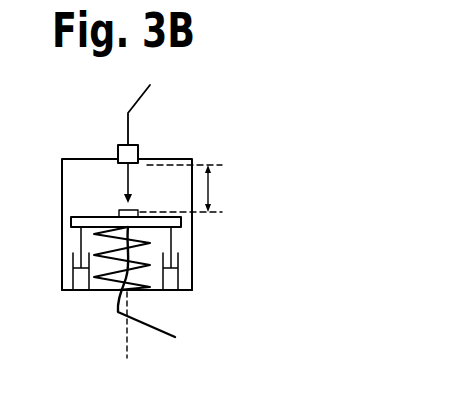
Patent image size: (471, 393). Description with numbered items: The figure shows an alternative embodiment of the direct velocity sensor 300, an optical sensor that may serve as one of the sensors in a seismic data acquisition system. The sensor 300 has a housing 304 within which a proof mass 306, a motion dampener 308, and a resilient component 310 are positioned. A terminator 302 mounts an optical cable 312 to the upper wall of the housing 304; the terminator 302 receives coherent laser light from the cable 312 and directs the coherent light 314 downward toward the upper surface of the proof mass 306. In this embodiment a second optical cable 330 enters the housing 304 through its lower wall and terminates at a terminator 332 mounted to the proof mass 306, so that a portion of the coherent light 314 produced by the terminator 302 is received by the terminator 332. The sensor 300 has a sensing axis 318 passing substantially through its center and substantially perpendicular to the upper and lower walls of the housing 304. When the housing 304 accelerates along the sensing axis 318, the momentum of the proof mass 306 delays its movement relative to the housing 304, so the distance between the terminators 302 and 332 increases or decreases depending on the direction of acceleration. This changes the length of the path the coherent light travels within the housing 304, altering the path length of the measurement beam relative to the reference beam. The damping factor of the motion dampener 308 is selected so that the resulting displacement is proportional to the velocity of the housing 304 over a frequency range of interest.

The direct velocity sensor 300 is at (207, 93).
The terminator 302 is at (118, 148).
The housing 304 is at (151, 158).
The proof mass 306 is at (80, 217).
The motion dampener 308 is at (72, 275).
The resilient component 310 is at (108, 289).
The optical cable 312 is at (128, 111).
The coherent light 314 is at (125, 193).
The sensing axis 318 is at (128, 350).
The second optical cable 330 is at (117, 313).
The terminator 332 is at (133, 229).